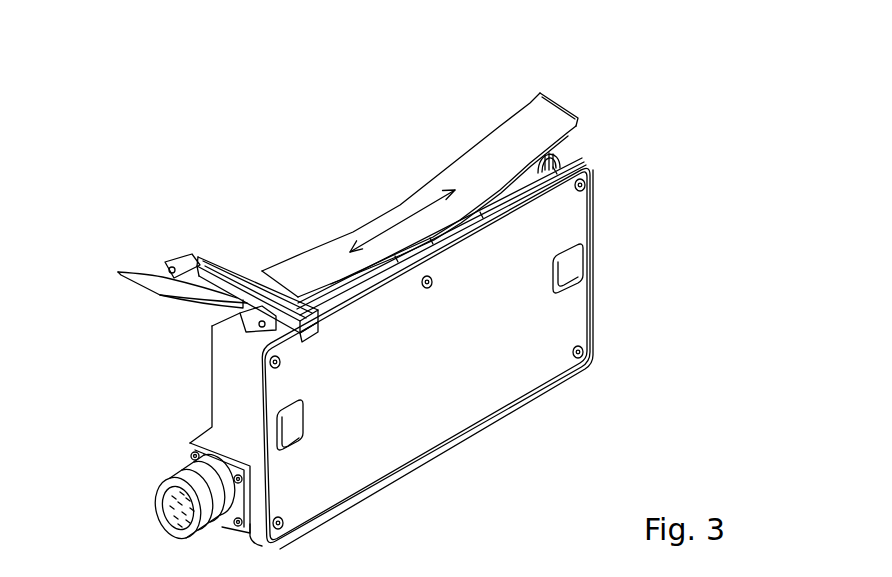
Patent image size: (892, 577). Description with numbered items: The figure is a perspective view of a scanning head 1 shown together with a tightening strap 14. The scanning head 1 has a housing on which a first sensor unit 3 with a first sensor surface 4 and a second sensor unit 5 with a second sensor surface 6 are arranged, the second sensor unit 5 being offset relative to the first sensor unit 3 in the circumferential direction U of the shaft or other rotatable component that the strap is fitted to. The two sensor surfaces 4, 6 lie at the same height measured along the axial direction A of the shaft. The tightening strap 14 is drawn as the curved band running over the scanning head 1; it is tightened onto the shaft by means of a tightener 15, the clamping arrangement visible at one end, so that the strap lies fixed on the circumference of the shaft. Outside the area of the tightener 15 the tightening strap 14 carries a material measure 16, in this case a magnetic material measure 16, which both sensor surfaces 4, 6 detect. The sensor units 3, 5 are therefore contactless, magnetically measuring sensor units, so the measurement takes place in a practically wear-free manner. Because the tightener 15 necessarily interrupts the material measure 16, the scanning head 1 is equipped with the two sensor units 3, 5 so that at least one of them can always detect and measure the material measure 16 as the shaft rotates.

The scanning head 1 is at (527, 333).
The first sensor unit 3 is at (337, 288).
The first sensor surface 4 is at (357, 278).
The second sensor unit 5 is at (505, 192).
The second sensor surface 6 is at (517, 187).
The tightening strap 14 is at (492, 157).
The tightener 15 is at (232, 262).
The material measure 16 is at (580, 131).
The axial direction A is at (368, 192).
The circumferential direction U is at (408, 224).